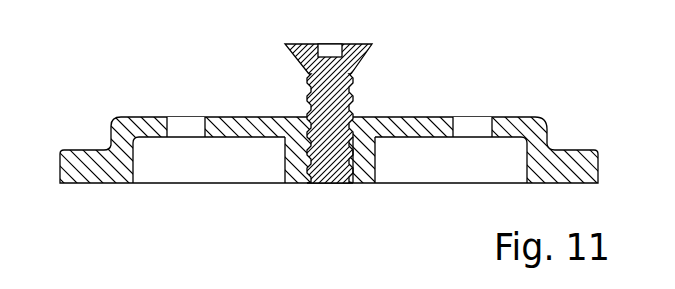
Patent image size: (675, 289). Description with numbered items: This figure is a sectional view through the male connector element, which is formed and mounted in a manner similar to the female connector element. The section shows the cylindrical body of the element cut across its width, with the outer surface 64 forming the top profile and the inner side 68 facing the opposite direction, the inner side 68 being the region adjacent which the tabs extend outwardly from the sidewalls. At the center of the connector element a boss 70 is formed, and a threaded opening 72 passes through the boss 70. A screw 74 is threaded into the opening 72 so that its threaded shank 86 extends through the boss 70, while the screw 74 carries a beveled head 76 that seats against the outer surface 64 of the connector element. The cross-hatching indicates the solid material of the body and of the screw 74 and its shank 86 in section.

The outer surface 64 is at (233, 117).
The inner side 68 is at (215, 183).
The boss 70 is at (297, 165).
The threaded opening 72 is at (352, 140).
The screw 74 is at (345, 97).
The beveled head 76 is at (367, 62).
The threaded shank 86 is at (308, 108).